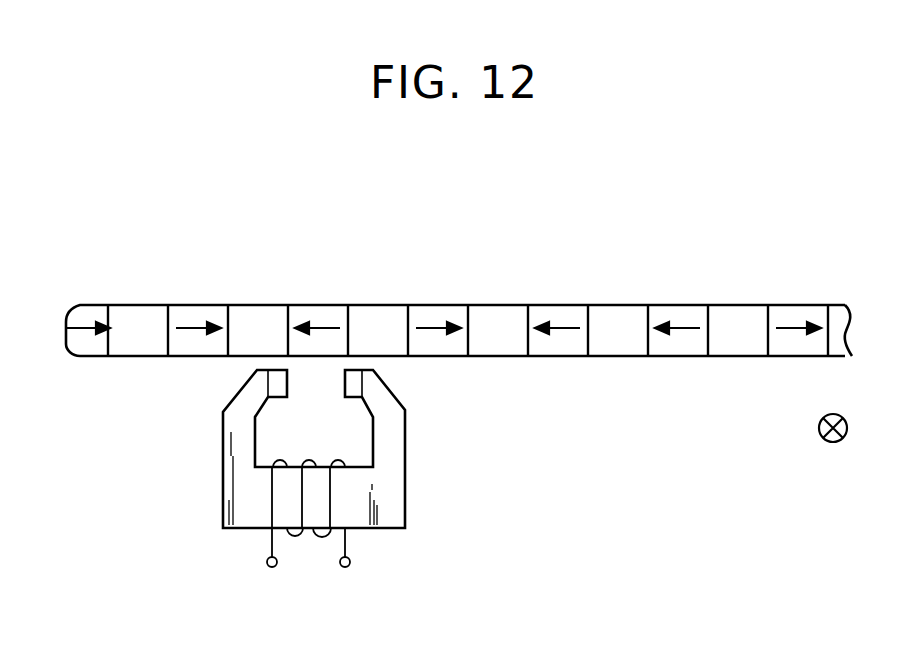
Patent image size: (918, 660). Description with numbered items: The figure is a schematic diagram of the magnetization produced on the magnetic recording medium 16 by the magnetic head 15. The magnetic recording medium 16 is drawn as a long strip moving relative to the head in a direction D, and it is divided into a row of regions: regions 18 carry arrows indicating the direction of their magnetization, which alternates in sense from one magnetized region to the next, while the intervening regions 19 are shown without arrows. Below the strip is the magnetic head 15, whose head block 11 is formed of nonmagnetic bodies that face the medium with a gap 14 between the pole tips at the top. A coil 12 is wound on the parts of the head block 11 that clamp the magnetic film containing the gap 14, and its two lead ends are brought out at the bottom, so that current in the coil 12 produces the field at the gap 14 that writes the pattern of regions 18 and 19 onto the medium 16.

The head block 11 is at (383, 494).
The coil 12 is at (322, 545).
The gap 14 is at (325, 385).
The magnetic head 15 is at (222, 488).
The magnetic recording medium 16 is at (93, 357).
The magnetized region 18 is at (91, 312).
The non-magnetized region 19 is at (138, 340).
The direction of medium travel D is at (830, 444).